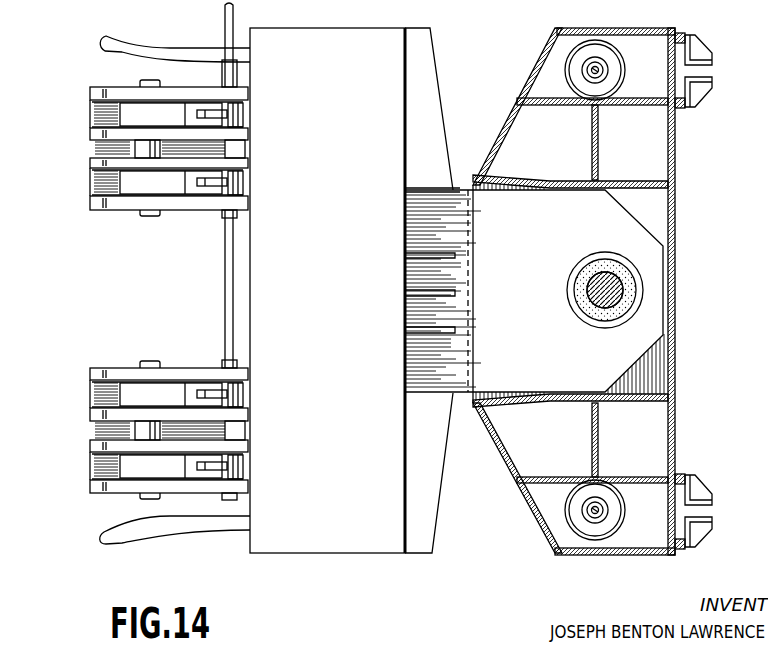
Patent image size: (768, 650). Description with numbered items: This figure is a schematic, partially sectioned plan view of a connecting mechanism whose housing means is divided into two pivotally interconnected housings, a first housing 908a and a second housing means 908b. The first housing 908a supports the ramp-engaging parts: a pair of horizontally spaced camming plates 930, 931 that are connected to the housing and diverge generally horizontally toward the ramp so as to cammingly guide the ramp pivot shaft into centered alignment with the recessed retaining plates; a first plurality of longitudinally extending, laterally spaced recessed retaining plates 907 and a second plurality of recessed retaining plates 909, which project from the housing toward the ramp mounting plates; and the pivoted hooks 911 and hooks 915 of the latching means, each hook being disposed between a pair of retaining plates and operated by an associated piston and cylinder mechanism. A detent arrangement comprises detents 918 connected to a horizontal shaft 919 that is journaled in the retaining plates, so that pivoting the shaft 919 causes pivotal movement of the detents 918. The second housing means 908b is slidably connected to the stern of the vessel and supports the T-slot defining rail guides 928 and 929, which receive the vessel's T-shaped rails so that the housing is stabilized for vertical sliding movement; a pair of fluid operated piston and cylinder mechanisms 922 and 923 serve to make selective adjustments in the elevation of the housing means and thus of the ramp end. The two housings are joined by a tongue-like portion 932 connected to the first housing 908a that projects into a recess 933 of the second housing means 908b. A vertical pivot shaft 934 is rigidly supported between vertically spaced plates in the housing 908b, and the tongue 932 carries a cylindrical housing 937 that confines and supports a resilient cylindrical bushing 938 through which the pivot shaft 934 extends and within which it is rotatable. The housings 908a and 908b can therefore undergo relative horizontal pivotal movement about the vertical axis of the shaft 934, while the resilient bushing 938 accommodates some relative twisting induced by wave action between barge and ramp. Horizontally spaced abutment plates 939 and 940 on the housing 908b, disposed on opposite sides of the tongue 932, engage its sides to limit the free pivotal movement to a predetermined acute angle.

The recessed retaining plates 907 is at (183, 205).
The first housing 908a is at (311, 268).
The second housing means 908b is at (512, 110).
The recessed retaining plates 909 is at (203, 372).
The plate-like hooks 911 is at (128, 453).
The hooks 915 is at (133, 183).
The detents 918 is at (215, 113).
The horizontal shaft 919 is at (236, 24).
The piston and cylinder mechanism 922 is at (585, 516).
The piston and cylinder mechanism 923 is at (583, 66).
The rail guide 928 is at (695, 537).
The rail guide 929 is at (697, 53).
The camming plate 930 is at (153, 530).
The camming plate 931 is at (168, 54).
The tongue-like portion 932 is at (545, 262).
The recess 933 is at (476, 404).
The vertical pivot shaft 934 is at (608, 280).
The cylindrical housing 937 is at (590, 330).
The resilient cylindrical bushing 938 is at (625, 302).
The abutment plate 939 is at (508, 407).
The abutment plate 940 is at (497, 178).